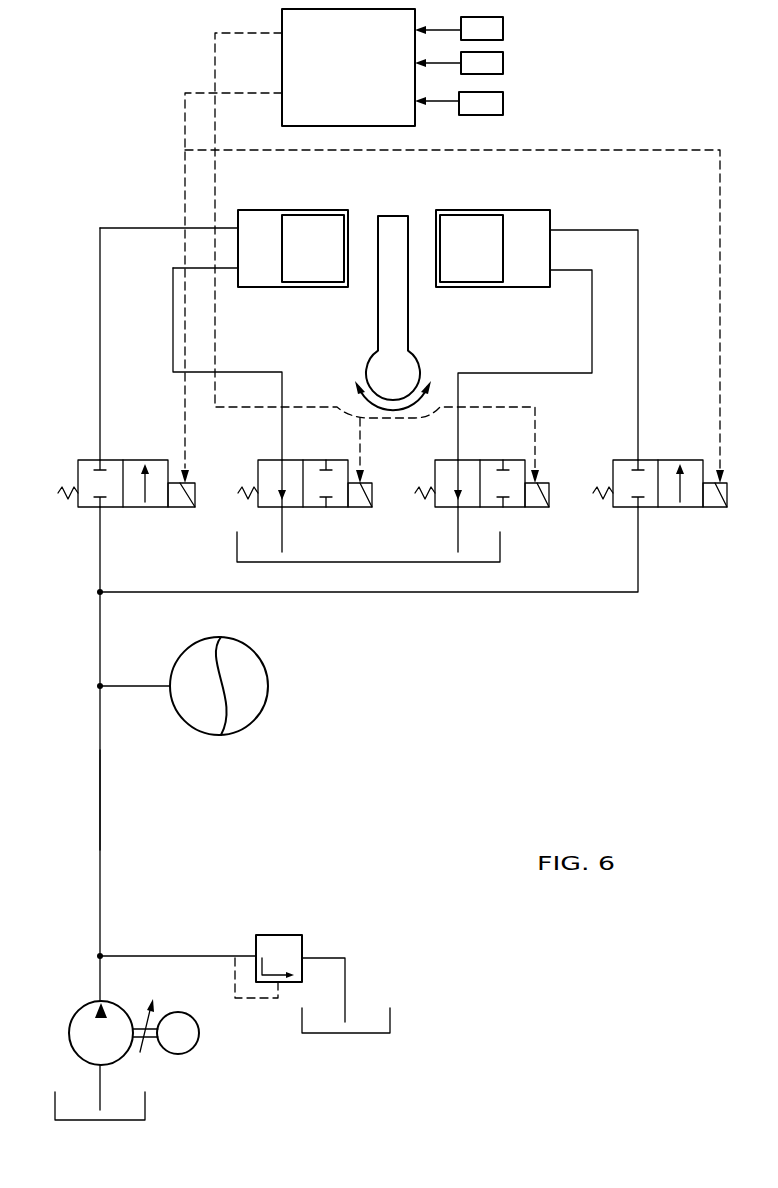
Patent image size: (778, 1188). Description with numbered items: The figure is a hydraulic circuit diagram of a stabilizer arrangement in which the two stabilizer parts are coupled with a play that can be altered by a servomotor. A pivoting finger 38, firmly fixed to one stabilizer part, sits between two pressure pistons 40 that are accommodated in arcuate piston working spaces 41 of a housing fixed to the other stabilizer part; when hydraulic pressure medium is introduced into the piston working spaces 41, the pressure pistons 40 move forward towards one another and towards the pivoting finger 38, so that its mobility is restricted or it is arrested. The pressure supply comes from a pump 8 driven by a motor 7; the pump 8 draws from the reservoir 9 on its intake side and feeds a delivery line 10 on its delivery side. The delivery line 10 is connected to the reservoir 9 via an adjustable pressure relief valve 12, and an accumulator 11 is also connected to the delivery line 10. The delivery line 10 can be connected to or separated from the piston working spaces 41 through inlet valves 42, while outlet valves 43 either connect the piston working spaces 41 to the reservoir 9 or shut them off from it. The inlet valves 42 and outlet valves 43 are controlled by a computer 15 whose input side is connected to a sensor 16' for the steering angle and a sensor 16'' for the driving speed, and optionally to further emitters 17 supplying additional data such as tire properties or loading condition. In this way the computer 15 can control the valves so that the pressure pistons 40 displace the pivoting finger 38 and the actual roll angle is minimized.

The computer 15 is at (381, 109).
The steering angle sensor 16' is at (482, 30).
The driving speed sensor 16'' is at (484, 64).
The further emitters 17 is at (503, 102).
The piston working spaces 41 is at (259, 211).
The pressure pistons 40 is at (322, 269).
The pivoting finger 38 is at (400, 328).
The inlet valves 42 is at (128, 462).
The outlet valves 43 is at (304, 462).
The reservoir 9 is at (494, 556).
The accumulator 11 is at (245, 718).
The delivery line 10 is at (100, 793).
The adjustable pressure relief valve 12 is at (281, 942).
The pump 8 is at (116, 1053).
The motor 7 is at (190, 1045).